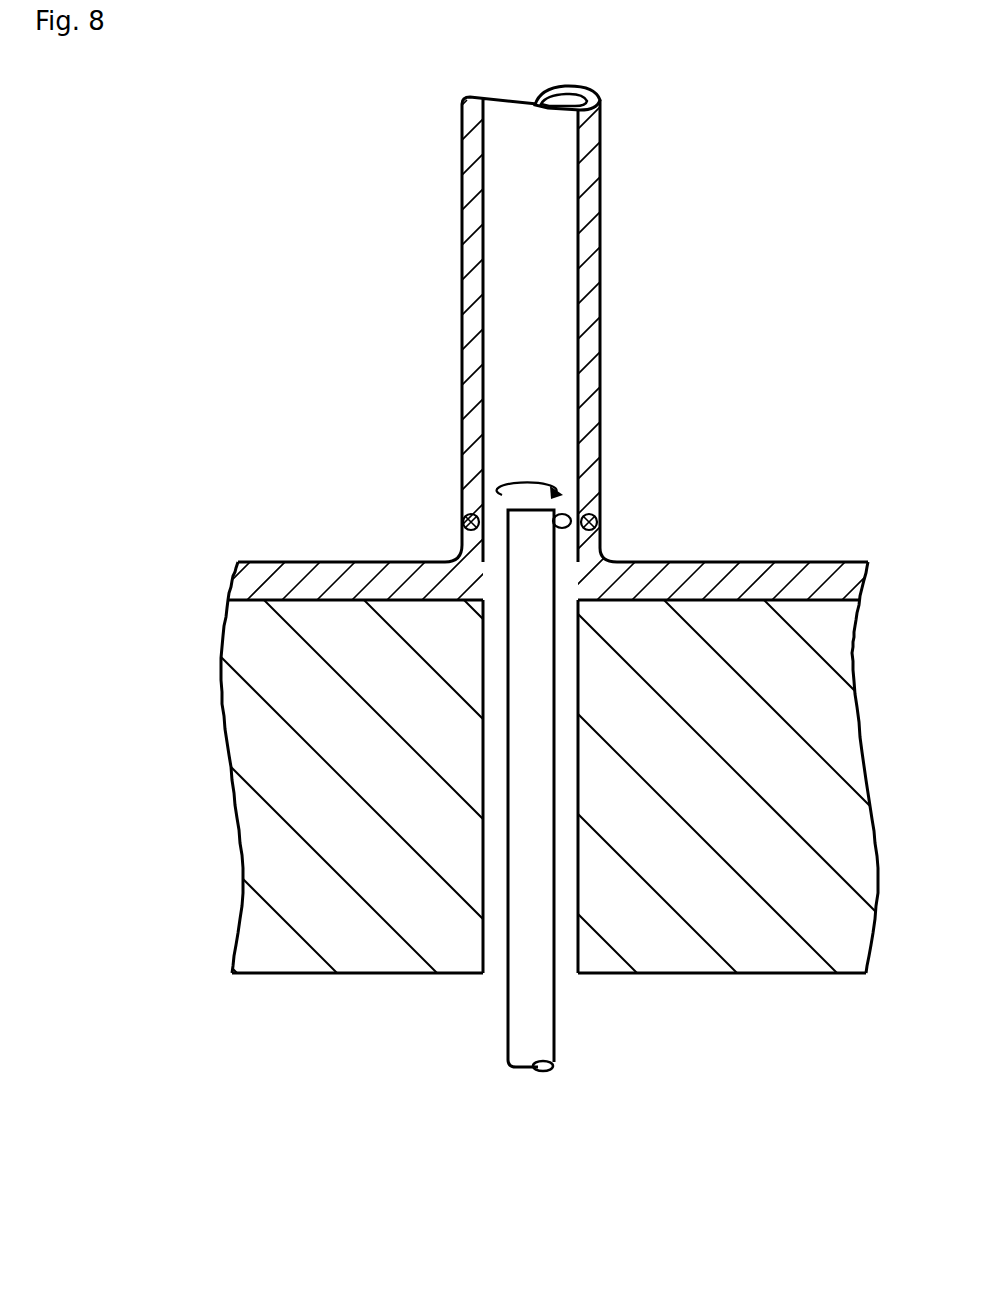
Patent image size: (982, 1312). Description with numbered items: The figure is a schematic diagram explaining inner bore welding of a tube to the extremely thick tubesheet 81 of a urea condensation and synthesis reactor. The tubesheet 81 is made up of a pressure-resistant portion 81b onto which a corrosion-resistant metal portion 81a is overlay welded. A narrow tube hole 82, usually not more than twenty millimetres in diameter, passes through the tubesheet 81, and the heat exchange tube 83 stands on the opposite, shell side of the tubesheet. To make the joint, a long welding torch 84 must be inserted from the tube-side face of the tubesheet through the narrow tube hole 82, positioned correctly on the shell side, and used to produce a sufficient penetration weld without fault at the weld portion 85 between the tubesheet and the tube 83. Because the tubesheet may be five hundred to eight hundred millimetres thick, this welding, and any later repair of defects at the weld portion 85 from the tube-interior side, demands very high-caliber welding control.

The tubesheet 81 is at (491, 536).
The corrosion-resistant metal portion 81a is at (236, 582).
The pressure-resistant portion 81b is at (126, 568).
The tube hole 82 is at (493, 962).
The tube 83 is at (603, 322).
The welding torch 84 is at (532, 1075).
The weld portion 85 is at (598, 521).